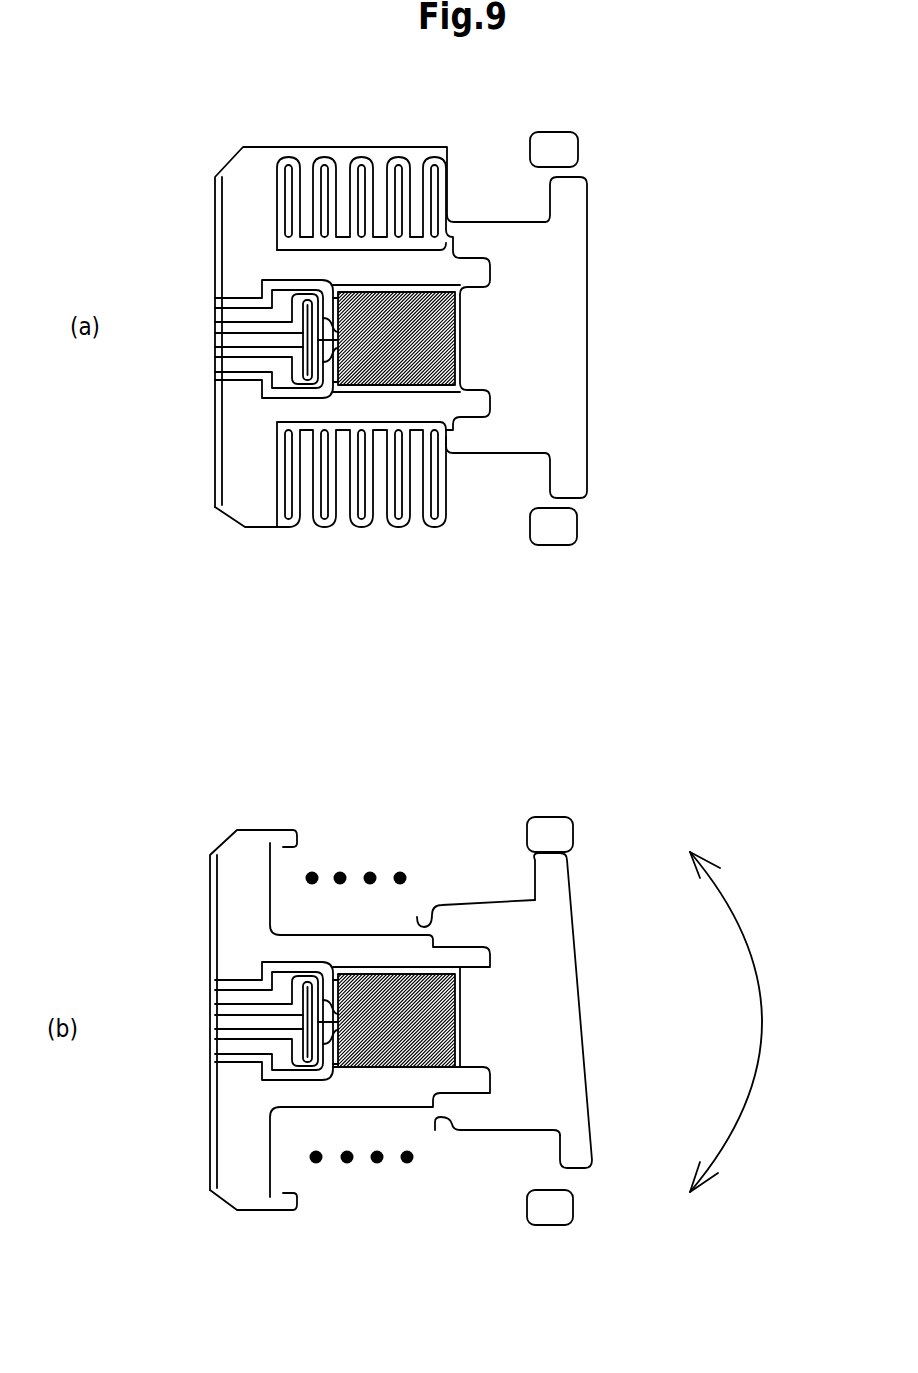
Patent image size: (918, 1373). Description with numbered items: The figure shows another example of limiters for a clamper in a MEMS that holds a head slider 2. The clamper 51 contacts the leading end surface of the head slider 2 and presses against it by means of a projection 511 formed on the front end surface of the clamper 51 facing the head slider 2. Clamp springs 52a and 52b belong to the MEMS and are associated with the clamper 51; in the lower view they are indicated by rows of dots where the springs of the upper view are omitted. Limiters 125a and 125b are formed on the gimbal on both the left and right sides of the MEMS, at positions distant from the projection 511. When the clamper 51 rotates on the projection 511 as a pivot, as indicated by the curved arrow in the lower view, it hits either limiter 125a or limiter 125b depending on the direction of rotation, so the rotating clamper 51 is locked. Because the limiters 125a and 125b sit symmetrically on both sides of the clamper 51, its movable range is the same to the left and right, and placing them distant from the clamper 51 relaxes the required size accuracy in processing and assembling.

The head slider 2 is at (383, 292).
The clamper 51 is at (588, 384).
The projection 511 is at (455, 337).
The limiter 125a is at (578, 140).
The limiter 125b is at (578, 525).
The clamp spring 52a is at (365, 865).
The clamp spring 52b is at (407, 1166).